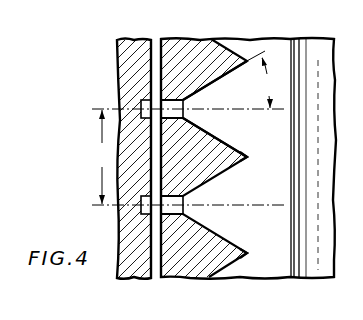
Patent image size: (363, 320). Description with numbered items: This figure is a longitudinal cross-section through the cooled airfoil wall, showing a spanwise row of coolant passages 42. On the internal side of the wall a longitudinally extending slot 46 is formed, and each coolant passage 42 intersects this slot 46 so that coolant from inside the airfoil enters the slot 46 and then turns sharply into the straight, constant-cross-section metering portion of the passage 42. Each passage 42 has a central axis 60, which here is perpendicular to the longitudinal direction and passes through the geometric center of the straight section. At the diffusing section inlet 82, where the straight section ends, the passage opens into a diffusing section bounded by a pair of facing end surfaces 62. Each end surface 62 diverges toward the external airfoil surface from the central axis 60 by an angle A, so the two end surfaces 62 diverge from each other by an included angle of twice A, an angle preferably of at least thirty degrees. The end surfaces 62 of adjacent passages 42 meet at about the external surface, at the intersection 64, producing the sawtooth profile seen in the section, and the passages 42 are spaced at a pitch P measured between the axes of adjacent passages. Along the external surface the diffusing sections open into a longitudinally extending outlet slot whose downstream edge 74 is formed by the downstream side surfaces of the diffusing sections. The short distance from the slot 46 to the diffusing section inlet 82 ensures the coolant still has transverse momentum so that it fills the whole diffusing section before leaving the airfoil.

The coolant passage 42 is at (230, 188).
The longitudinally extending slot 46 is at (158, 47).
The central axis 60 is at (265, 110).
The end surfaces 62 is at (222, 76).
The intersection of end surfaces 64 is at (248, 158).
The downstream edge 74 is at (292, 248).
The diffusing section inlet 82 is at (185, 114).
The pitch P is at (100, 157).
The angle A is at (268, 82).